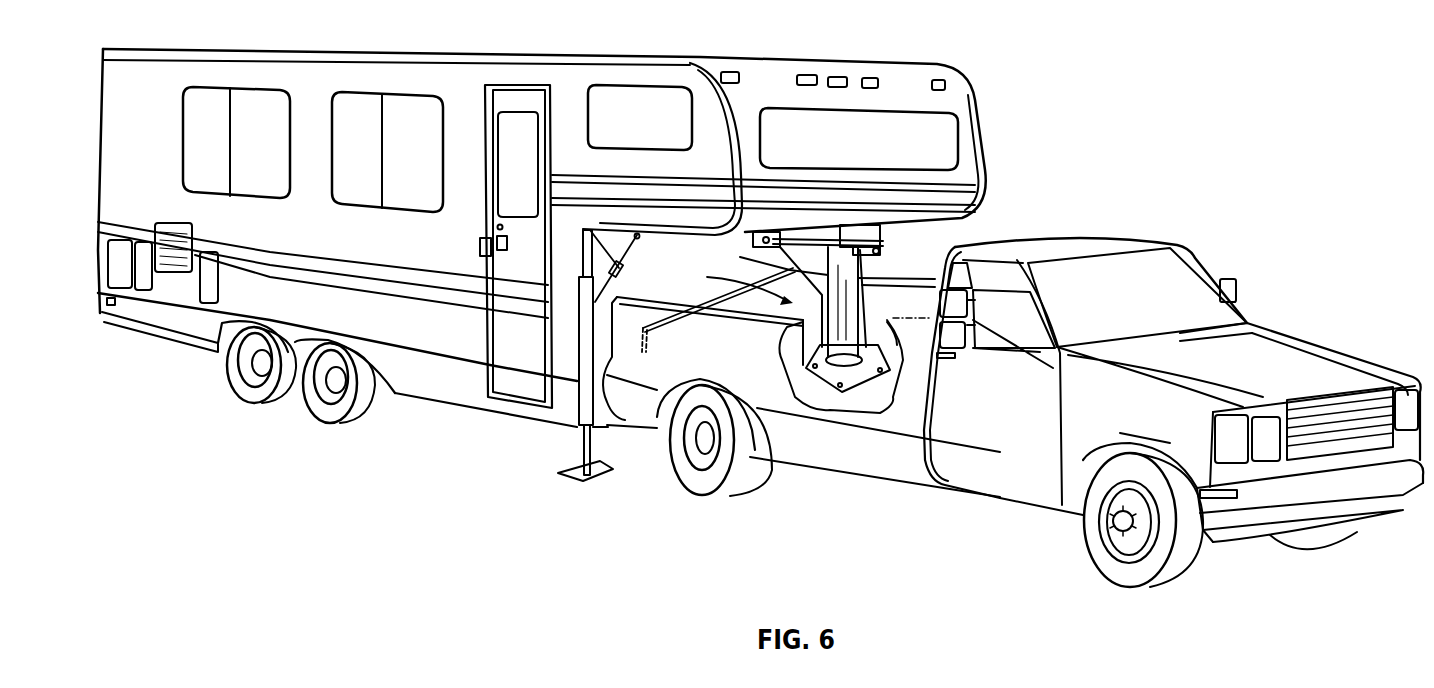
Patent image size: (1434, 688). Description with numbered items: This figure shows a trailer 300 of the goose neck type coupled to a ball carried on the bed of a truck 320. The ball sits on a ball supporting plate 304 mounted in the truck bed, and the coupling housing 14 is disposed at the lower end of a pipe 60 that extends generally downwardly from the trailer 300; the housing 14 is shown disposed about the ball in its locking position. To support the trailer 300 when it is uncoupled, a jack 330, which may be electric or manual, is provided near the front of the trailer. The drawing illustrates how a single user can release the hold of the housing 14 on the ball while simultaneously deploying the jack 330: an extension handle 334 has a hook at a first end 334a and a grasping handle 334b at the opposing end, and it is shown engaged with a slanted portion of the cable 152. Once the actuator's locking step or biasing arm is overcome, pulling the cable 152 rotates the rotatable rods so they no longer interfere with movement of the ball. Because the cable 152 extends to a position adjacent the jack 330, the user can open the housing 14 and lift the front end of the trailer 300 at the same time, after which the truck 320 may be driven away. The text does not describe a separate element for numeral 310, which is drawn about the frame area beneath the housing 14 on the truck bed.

The trailer 300 is at (887, 58).
The truck 320 is at (1037, 423).
The housing 14 is at (880, 305).
The pipe 60 is at (740, 285).
The cable 152 is at (590, 227).
The ball supporting plate 304 is at (837, 392).
The mounting frame 310 is at (890, 398).
The jack 330 is at (583, 400).
The extension handle 334 is at (713, 302).
The first end 334a is at (793, 270).
The grasping handle 334b is at (640, 345).